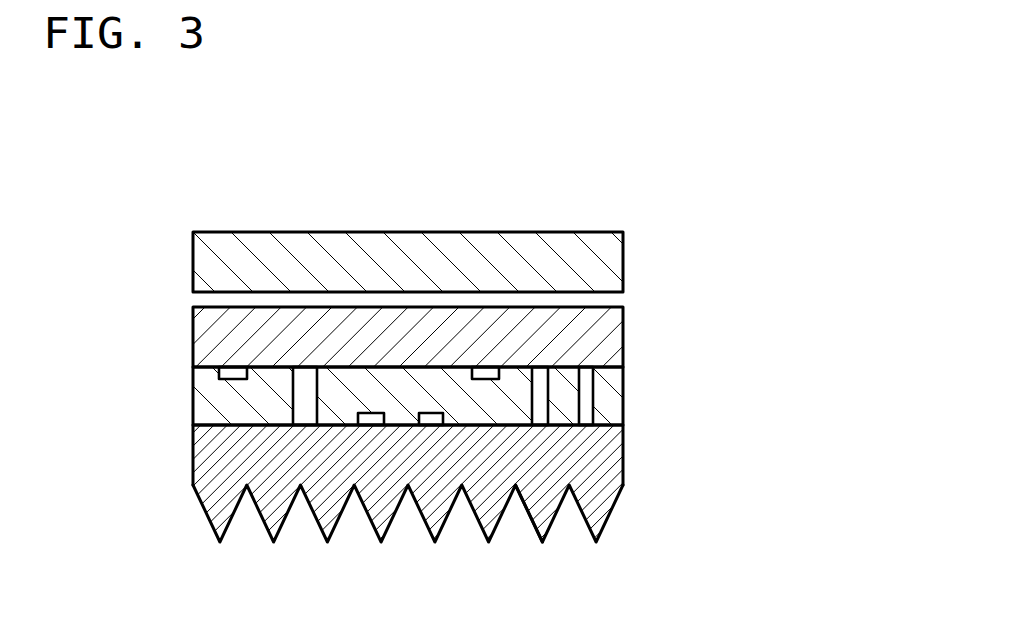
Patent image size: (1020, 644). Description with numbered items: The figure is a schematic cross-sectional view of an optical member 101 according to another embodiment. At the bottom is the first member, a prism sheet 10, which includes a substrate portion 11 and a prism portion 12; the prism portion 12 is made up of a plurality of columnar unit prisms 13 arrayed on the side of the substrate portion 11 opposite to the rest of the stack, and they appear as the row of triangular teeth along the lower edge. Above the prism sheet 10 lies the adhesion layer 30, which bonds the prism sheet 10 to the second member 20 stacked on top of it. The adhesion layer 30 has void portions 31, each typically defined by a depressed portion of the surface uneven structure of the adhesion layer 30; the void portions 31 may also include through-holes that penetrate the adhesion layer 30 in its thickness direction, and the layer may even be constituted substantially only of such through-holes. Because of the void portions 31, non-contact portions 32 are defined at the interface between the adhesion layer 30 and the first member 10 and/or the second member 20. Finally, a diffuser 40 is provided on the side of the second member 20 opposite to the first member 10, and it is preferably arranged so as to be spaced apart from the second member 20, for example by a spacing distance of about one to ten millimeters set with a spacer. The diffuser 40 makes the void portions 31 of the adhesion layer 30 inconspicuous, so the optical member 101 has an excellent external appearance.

The optical member 101 is at (628, 172).
The first member (prism sheet) 10 is at (439, 522).
The substrate portion 11 is at (603, 452).
The prism portion 12 is at (617, 500).
The columnar unit prisms 13 is at (545, 507).
The second member 20 is at (612, 337).
The adhesion layer 30 is at (401, 299).
The void portions 31 is at (233, 372).
The non-contact portions 32 is at (303, 373).
The diffuser 40 is at (612, 263).